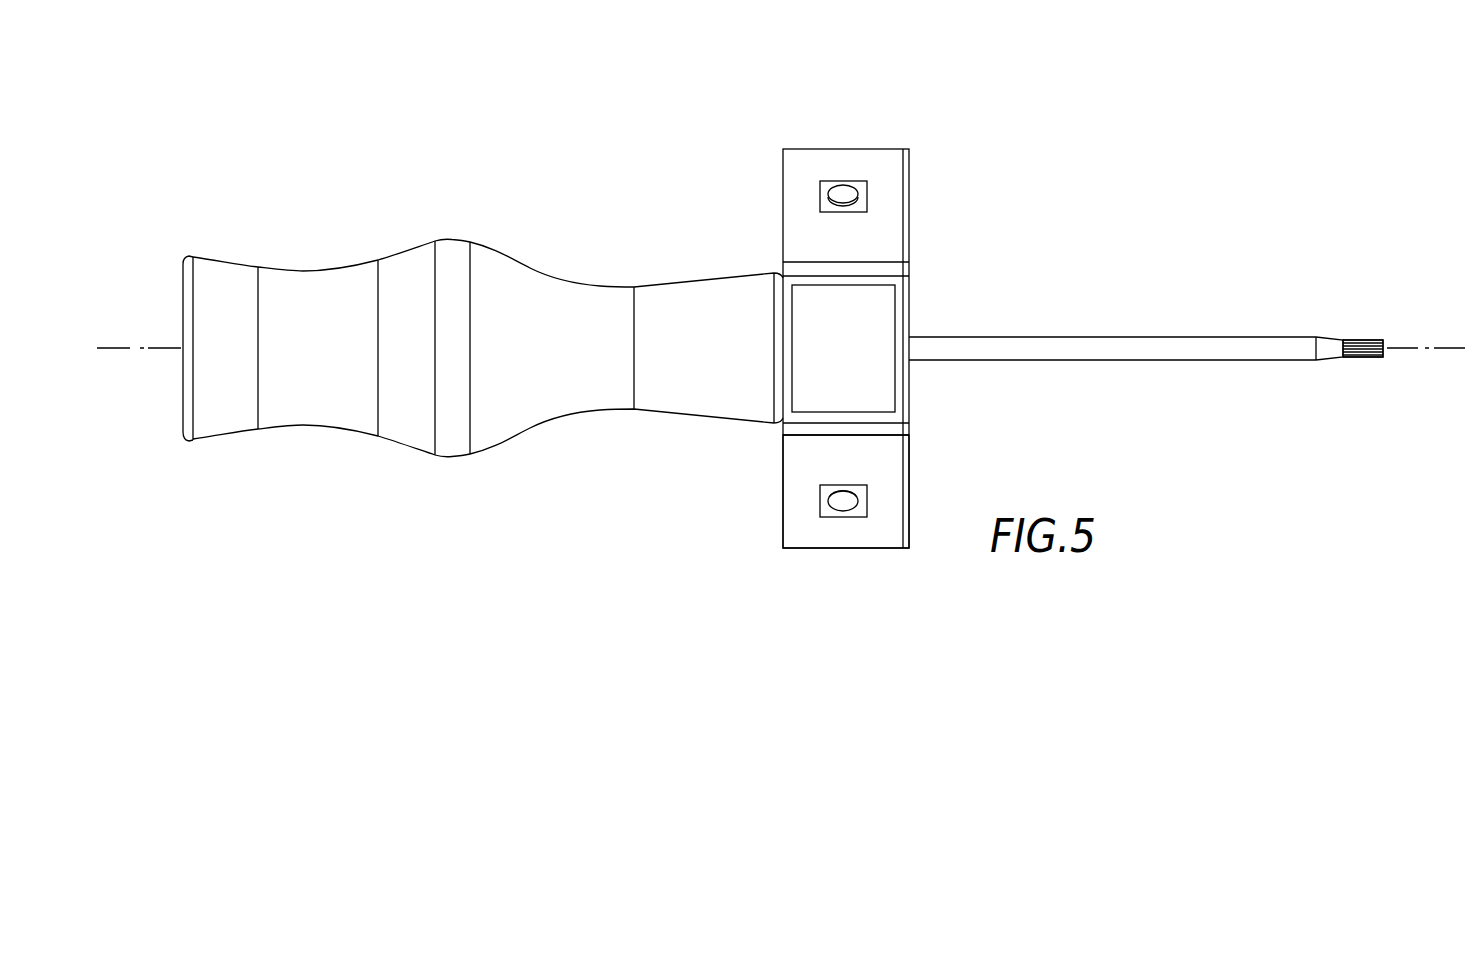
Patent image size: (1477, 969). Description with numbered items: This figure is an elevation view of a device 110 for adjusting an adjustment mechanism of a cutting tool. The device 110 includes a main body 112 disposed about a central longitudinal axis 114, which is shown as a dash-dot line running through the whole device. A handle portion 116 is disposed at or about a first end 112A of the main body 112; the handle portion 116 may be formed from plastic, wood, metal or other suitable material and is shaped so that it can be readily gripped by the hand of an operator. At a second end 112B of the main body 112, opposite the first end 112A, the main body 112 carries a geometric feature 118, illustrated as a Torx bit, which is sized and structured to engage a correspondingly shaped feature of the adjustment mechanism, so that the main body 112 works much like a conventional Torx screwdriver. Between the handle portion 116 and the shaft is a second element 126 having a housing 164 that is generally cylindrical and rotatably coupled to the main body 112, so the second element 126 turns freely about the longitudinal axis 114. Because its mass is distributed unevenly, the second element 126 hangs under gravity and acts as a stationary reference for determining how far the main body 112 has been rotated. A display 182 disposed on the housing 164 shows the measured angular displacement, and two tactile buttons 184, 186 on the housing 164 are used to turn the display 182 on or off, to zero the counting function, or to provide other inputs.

The device 110 is at (871, 98).
The main body 112 is at (959, 346).
The first end 112A is at (175, 282).
The second end 112B is at (1375, 375).
The central longitudinal axis 114 is at (152, 348).
The handle portion 116 is at (493, 284).
The geometric feature 118 is at (1360, 339).
The second element 126 is at (835, 566).
The housing 164 is at (884, 160).
The display 182 is at (872, 398).
The tactile button 184 is at (842, 505).
The tactile button 186 is at (845, 191).